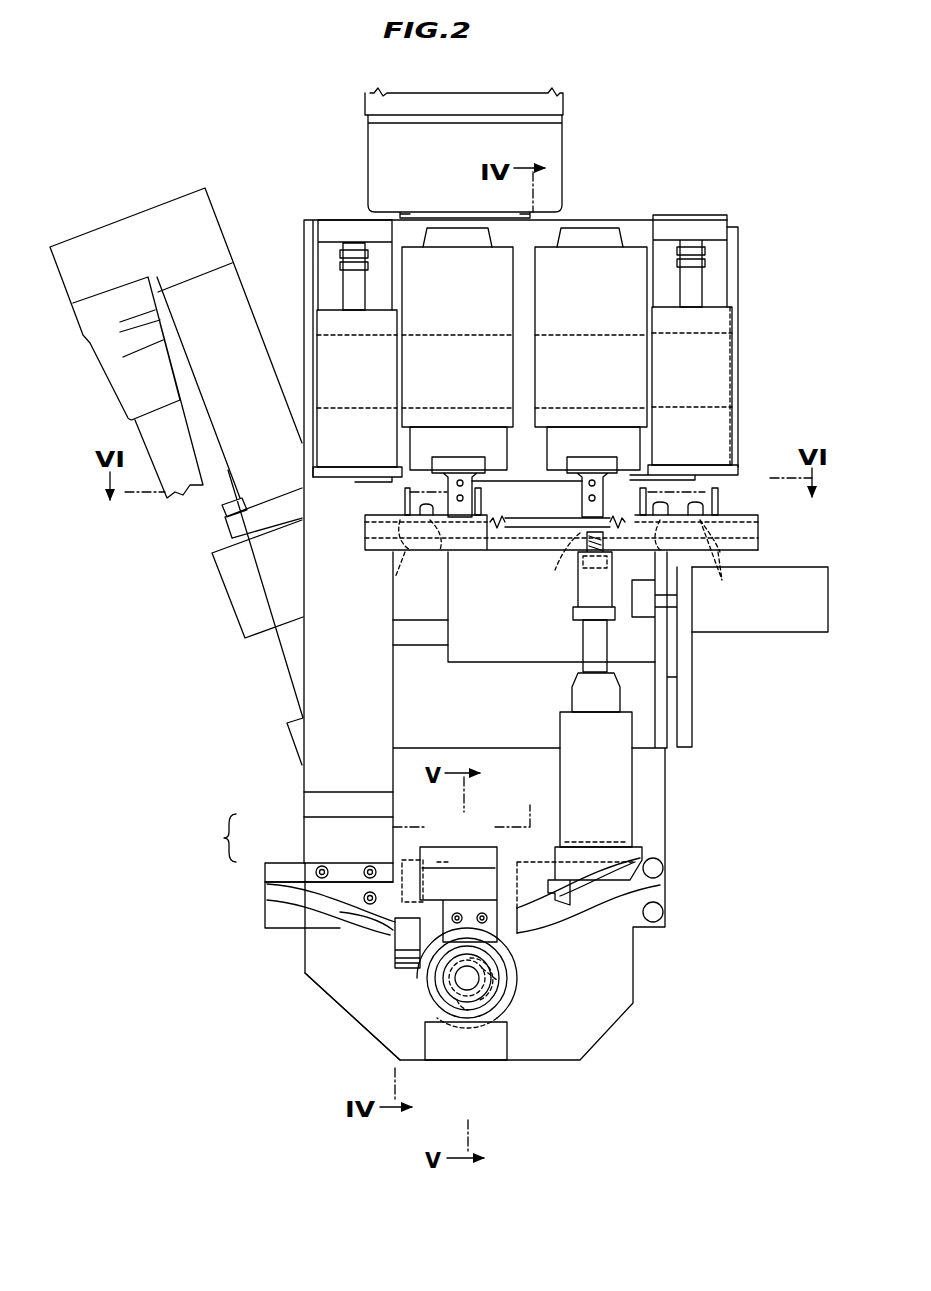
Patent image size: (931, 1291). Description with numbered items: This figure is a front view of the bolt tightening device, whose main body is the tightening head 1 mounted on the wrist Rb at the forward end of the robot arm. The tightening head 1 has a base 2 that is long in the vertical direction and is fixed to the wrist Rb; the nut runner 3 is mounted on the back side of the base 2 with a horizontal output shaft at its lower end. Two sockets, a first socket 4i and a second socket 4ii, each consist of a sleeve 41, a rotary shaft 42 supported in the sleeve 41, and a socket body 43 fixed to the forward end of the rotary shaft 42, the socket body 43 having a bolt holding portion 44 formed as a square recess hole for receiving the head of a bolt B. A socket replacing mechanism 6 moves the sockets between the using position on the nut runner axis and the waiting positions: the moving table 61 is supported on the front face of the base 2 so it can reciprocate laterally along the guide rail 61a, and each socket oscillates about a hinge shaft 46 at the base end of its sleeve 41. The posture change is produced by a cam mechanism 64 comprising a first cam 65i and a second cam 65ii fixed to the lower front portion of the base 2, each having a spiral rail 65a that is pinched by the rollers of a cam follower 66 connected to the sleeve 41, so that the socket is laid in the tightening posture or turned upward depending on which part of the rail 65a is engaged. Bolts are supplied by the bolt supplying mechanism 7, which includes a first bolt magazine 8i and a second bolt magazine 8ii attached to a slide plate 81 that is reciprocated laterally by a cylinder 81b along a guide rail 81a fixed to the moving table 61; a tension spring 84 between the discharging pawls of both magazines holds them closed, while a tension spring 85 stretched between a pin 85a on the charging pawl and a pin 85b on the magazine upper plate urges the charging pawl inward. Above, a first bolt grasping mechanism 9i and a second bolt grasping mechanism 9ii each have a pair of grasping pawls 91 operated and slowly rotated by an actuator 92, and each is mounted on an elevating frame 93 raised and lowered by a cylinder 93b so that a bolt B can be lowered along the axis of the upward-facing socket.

The tightening head 1 is at (608, 186).
The base 2 is at (303, 665).
The nut runner 3 is at (163, 205).
The first socket 4i is at (412, 993).
The second socket 4ii is at (640, 787).
The socket replacing mechanism 6 is at (223, 838).
The bolt supplying mechanism 7 is at (745, 303).
The first bolt magazine 8i is at (365, 527).
The second bolt magazine 8ii is at (758, 531).
The first bolt grasping mechanism 9i is at (441, 224).
The second bolt grasping mechanism 9ii is at (581, 224).
The sleeve 41 is at (560, 733).
The rotary shaft 42 is at (583, 640).
The socket body 43 is at (578, 600).
The bolt holding portion 44 is at (498, 968).
The hinge shaft 46 is at (448, 868).
The moving table 61 is at (393, 828).
The guide rail 61a is at (340, 785).
The cam mechanism 64 is at (306, 866).
The rail 65a is at (322, 910).
The first cam 65i is at (283, 928).
The second cam 65ii is at (643, 928).
The cam follower 66 is at (393, 928).
The slide plate 81 is at (497, 662).
The guide rail 81a is at (418, 645).
The cylinder 81b is at (760, 632).
The tension spring 84 is at (541, 518).
The tension spring 85 is at (430, 478).
The pin 85a is at (402, 503).
The pin 85b is at (483, 503).
The grasping pawls 91 is at (547, 482).
The actuator 92 is at (536, 250).
The elevating frame 93 is at (455, 335).
The cylinder 93b is at (313, 402).
The bolt B is at (519, 1003).
The wrist Rb is at (368, 150).